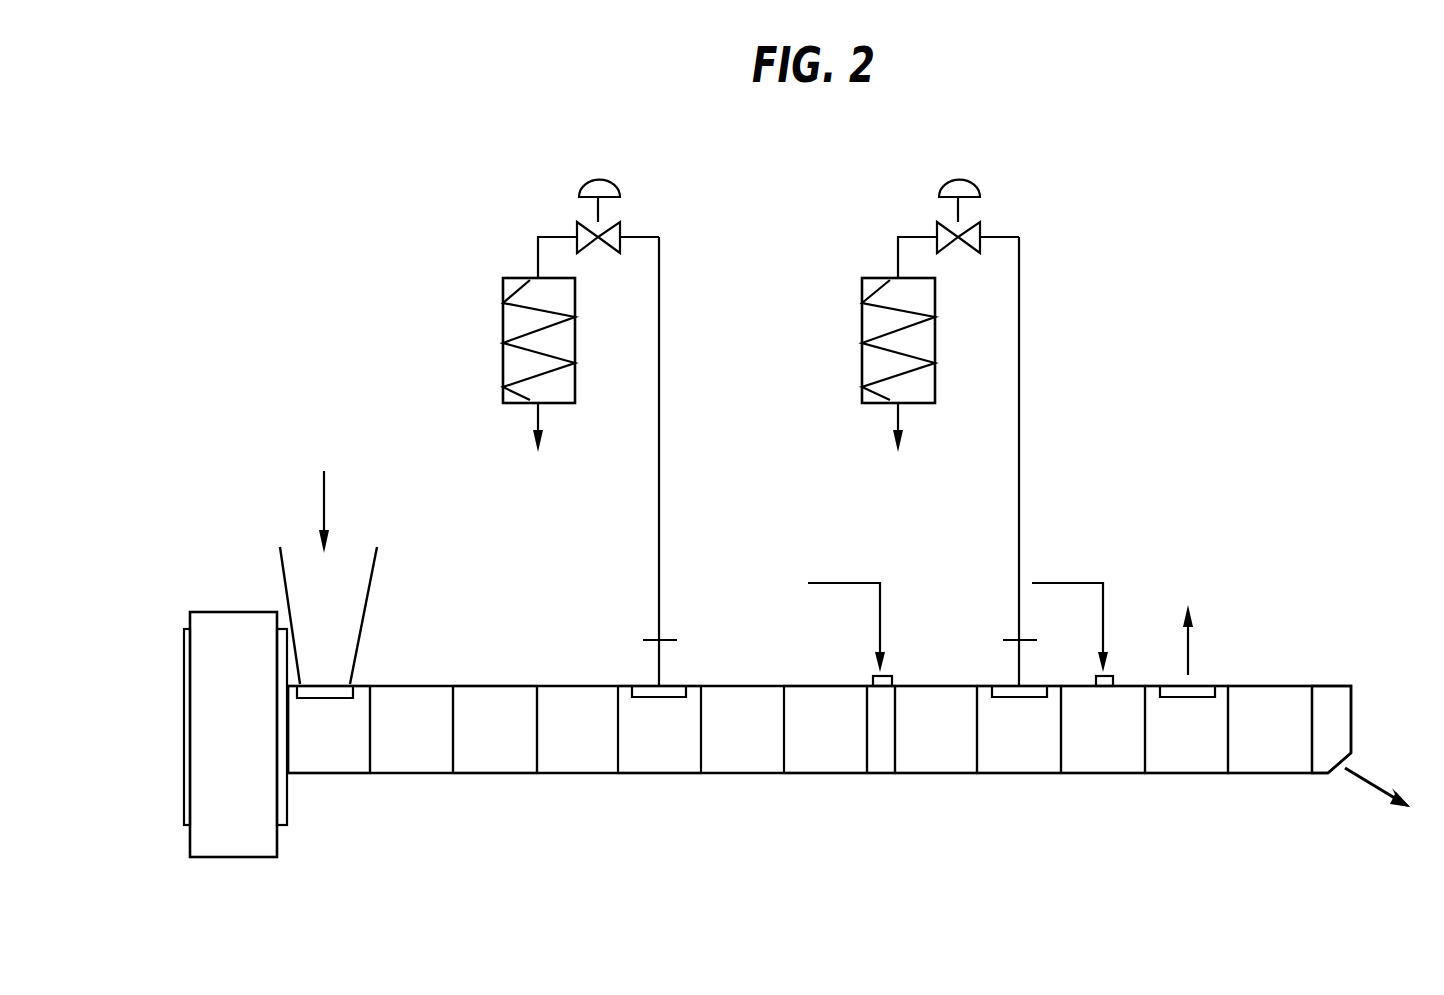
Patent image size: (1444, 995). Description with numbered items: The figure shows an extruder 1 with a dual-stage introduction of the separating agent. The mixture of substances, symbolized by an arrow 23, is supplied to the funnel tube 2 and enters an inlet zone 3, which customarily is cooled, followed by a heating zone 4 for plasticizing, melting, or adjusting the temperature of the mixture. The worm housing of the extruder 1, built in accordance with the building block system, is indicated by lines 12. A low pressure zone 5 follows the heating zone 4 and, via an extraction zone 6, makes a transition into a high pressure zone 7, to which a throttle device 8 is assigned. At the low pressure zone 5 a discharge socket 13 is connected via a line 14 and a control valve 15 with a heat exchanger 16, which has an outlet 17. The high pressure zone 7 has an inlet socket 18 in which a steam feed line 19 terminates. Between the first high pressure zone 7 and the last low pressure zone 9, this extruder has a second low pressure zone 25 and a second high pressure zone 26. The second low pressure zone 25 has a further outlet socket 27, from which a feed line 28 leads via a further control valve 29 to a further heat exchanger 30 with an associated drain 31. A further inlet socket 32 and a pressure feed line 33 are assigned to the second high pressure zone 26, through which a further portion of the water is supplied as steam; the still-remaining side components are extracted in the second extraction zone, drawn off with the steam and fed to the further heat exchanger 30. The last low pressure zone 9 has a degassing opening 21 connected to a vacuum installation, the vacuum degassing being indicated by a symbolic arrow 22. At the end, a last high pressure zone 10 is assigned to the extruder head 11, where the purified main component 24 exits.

The extruder 1 is at (180, 735).
The funnel tube 2 is at (343, 603).
The inlet zone 3 is at (333, 758).
The heating zone 4 is at (498, 757).
The low pressure zone 5 is at (660, 757).
The extraction zone 6 is at (815, 757).
The high pressure zone 7 is at (878, 757).
The throttle device 8 is at (950, 757).
The last low pressure zone 9 is at (1185, 757).
The last high pressure zone 10 is at (1255, 757).
The extruder head 11 is at (1338, 707).
The lines 12 is at (453, 738).
The discharge socket 13 is at (660, 660).
The line 14 is at (659, 453).
The control valve 15 is at (608, 185).
The heat exchanger 16 is at (503, 290).
The outlet 17 is at (540, 418).
The inlet socket 18 is at (882, 673).
The steam feed line 19 is at (882, 605).
The degassing opening 21 is at (1208, 685).
The symbolic arrow 22 is at (1192, 652).
The arrow 23 is at (325, 493).
The purified main component 24 is at (1362, 782).
The second low pressure zone 25 is at (1020, 757).
The second high pressure zone 26 is at (1102, 757).
The further outlet socket 27 is at (1022, 668).
The feed line 28 is at (1019, 453).
The further control valve 29 is at (968, 185).
The further heat exchanger 30 is at (862, 290).
The drain 31 is at (900, 418).
The further inlet socket 32 is at (1113, 678).
The pressure feed line 33 is at (1078, 583).